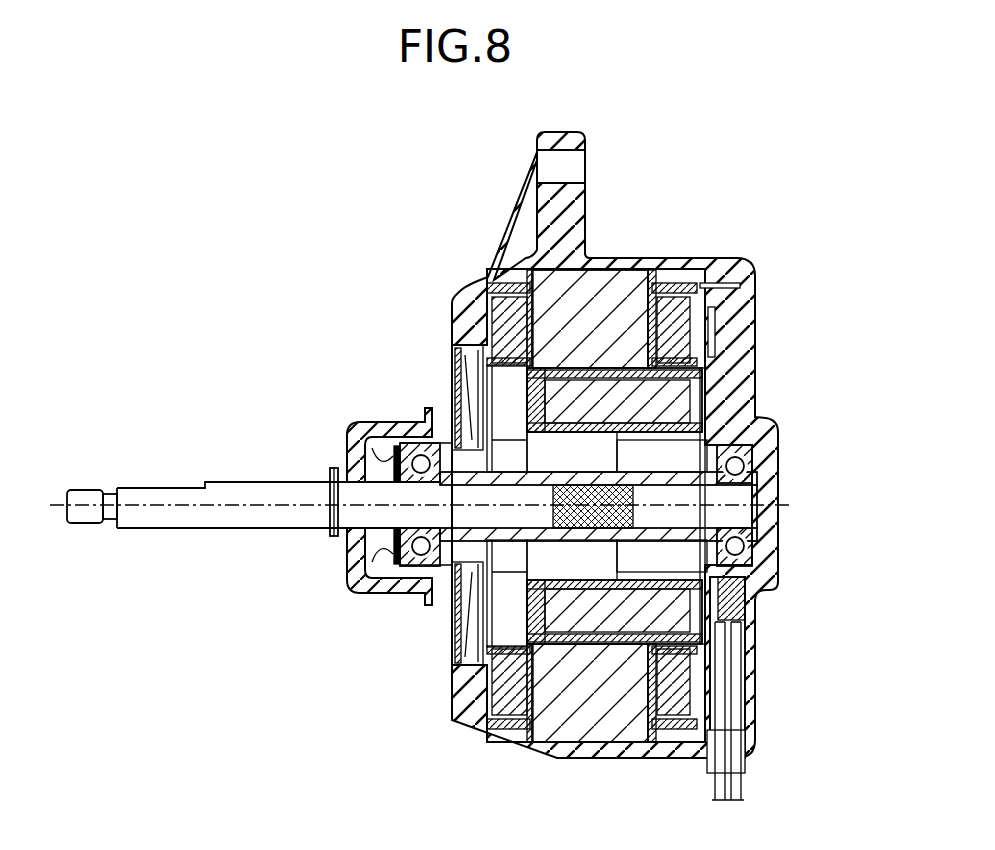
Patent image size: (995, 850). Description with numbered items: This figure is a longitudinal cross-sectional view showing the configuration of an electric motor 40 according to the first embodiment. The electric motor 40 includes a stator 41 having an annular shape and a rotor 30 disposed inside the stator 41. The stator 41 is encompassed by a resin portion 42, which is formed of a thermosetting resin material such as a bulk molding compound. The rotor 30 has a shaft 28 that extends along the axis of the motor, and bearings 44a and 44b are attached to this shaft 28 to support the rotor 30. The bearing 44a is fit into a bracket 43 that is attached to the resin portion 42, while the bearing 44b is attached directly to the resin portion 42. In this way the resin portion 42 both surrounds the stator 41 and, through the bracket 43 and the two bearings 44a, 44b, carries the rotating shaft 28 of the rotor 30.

The electric motor 40 is at (248, 207).
The stator 41 is at (632, 282).
The resin portion 42 is at (737, 353).
The bracket 43 is at (468, 395).
The bearing 44a is at (407, 551).
The bearing 44b is at (740, 466).
The shaft 28 is at (162, 517).
The rotor 30 is at (547, 610).